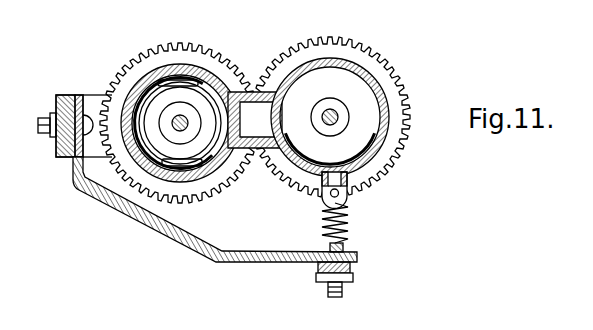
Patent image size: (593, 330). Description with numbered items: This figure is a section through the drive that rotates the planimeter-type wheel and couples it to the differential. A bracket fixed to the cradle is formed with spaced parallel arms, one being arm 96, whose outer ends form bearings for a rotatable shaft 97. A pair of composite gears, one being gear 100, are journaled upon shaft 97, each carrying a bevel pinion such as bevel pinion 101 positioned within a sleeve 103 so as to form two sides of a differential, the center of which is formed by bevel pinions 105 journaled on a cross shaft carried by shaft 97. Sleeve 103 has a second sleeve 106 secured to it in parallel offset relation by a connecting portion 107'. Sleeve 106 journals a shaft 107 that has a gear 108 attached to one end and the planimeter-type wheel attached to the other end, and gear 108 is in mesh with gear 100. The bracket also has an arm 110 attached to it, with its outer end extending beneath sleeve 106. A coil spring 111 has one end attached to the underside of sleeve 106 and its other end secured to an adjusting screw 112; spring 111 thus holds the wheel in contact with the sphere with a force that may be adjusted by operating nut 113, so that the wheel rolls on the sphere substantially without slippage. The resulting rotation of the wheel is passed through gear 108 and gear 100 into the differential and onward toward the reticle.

The arm 96 is at (93, 98).
The shaft 97 is at (125, 157).
The composite gear 100 is at (152, 59).
The bevel pinion 101 is at (173, 128).
The sleeve 103 is at (214, 158).
The bevel pinions 105 is at (182, 78).
The second sleeve 106 is at (378, 88).
The shaft 107 is at (380, 109).
The connecting portion 107' is at (259, 85).
The gear 108 is at (398, 119).
The arm 110 is at (125, 212).
The coil spring 111 is at (348, 220).
The adjusting screw 112 is at (343, 290).
The nut 113 is at (352, 270).